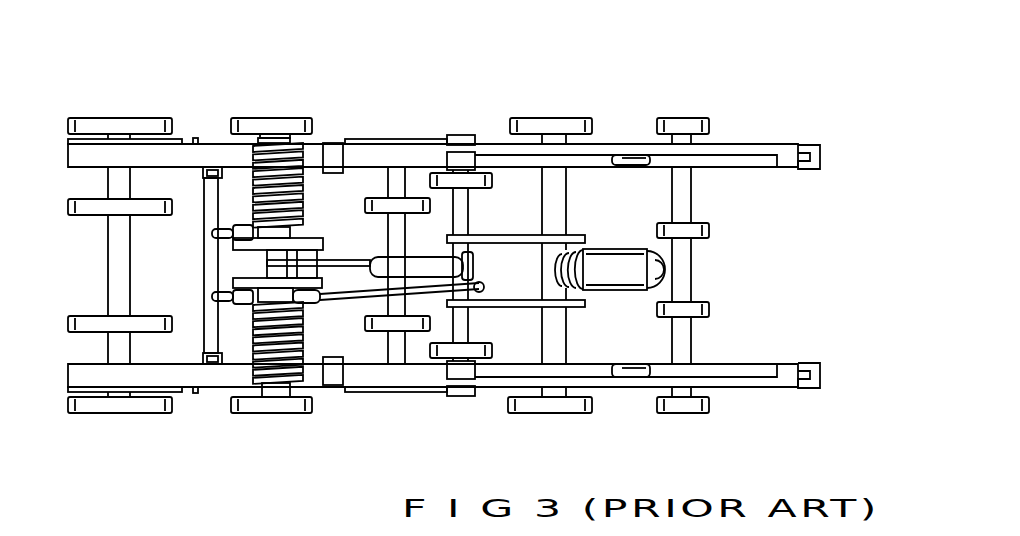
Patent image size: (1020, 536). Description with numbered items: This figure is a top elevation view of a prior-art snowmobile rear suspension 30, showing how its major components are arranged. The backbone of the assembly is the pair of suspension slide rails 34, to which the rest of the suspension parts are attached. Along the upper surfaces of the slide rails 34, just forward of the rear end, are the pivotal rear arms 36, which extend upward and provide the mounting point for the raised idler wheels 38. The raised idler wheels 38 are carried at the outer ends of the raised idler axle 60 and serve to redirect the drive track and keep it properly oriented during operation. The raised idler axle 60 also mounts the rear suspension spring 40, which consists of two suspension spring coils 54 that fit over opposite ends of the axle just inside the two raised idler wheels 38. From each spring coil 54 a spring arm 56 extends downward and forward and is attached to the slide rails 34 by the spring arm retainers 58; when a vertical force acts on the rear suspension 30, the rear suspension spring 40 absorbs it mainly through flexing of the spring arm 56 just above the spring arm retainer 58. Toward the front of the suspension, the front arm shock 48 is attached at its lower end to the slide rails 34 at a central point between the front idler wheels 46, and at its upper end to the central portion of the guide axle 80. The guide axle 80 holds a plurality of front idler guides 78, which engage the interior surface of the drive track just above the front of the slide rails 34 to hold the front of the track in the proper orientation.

The rear suspension 30 is at (113, 92).
The suspension slide rails 34 is at (211, 144).
The rear arms 36 is at (153, 118).
The raised idler wheels 38 is at (276, 118).
The rear suspension spring 40 is at (334, 101).
The front idler wheels 46 is at (568, 120).
The front arm shock 48 is at (612, 248).
The suspension spring coils 54 is at (300, 158).
The spring arm 56 is at (413, 137).
The spring arm retainers 58 is at (467, 137).
The raised idler axle 60 is at (300, 264).
The front idler guides 78 is at (713, 120).
The guide axle 80 is at (693, 198).